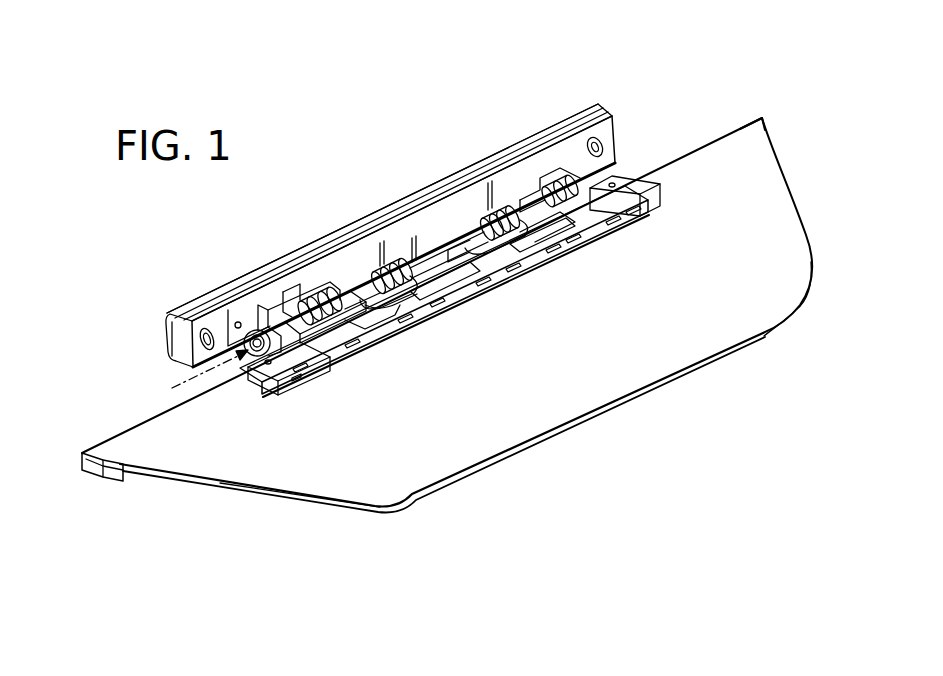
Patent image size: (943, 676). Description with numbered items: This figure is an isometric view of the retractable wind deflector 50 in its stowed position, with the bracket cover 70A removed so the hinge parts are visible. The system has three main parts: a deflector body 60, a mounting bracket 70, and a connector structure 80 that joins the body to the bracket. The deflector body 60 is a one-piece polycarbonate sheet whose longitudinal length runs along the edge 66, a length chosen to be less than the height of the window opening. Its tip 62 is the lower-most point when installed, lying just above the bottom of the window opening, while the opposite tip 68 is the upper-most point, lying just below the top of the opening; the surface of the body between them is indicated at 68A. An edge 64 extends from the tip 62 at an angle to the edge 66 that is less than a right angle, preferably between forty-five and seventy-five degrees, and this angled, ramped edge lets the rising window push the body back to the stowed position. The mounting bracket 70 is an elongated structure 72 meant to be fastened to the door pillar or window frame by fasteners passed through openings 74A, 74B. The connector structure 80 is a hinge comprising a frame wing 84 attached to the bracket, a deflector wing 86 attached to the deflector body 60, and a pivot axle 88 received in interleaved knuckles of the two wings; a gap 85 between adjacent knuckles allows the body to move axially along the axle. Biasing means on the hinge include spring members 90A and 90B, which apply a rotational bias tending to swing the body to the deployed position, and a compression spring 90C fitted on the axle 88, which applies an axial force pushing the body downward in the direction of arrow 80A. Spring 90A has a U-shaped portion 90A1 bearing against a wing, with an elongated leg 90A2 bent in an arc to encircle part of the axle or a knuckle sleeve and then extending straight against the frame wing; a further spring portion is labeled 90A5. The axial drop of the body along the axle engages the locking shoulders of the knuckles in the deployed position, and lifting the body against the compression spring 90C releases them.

The retractable wind deflector 50 is at (402, 150).
The deflector body 60 is at (453, 463).
The tip 62 is at (762, 118).
The edge 64 is at (803, 214).
The edge 66 is at (672, 158).
The tip 68 is at (83, 470).
The plate top surface 68A is at (252, 484).
The mounting bracket 70 is at (172, 345).
The cover 70A is at (490, 167).
The elongated structure 72 is at (216, 302).
The opening 74A is at (205, 332).
The opening 74B is at (596, 138).
The connector structure 80 is at (613, 173).
The arrow 80A is at (190, 378).
The frame wing 84 is at (318, 289).
The gap 85 is at (350, 346).
The deflector wing 86 is at (330, 386).
The pivot axle 88 is at (372, 288).
The spring member 90A is at (365, 336).
The U-shaped portion 90A1 is at (386, 313).
The leg 90A2 is at (332, 279).
The arm 90A5 is at (378, 326).
The spring member 90B is at (513, 251).
The compression spring 90C is at (415, 240).